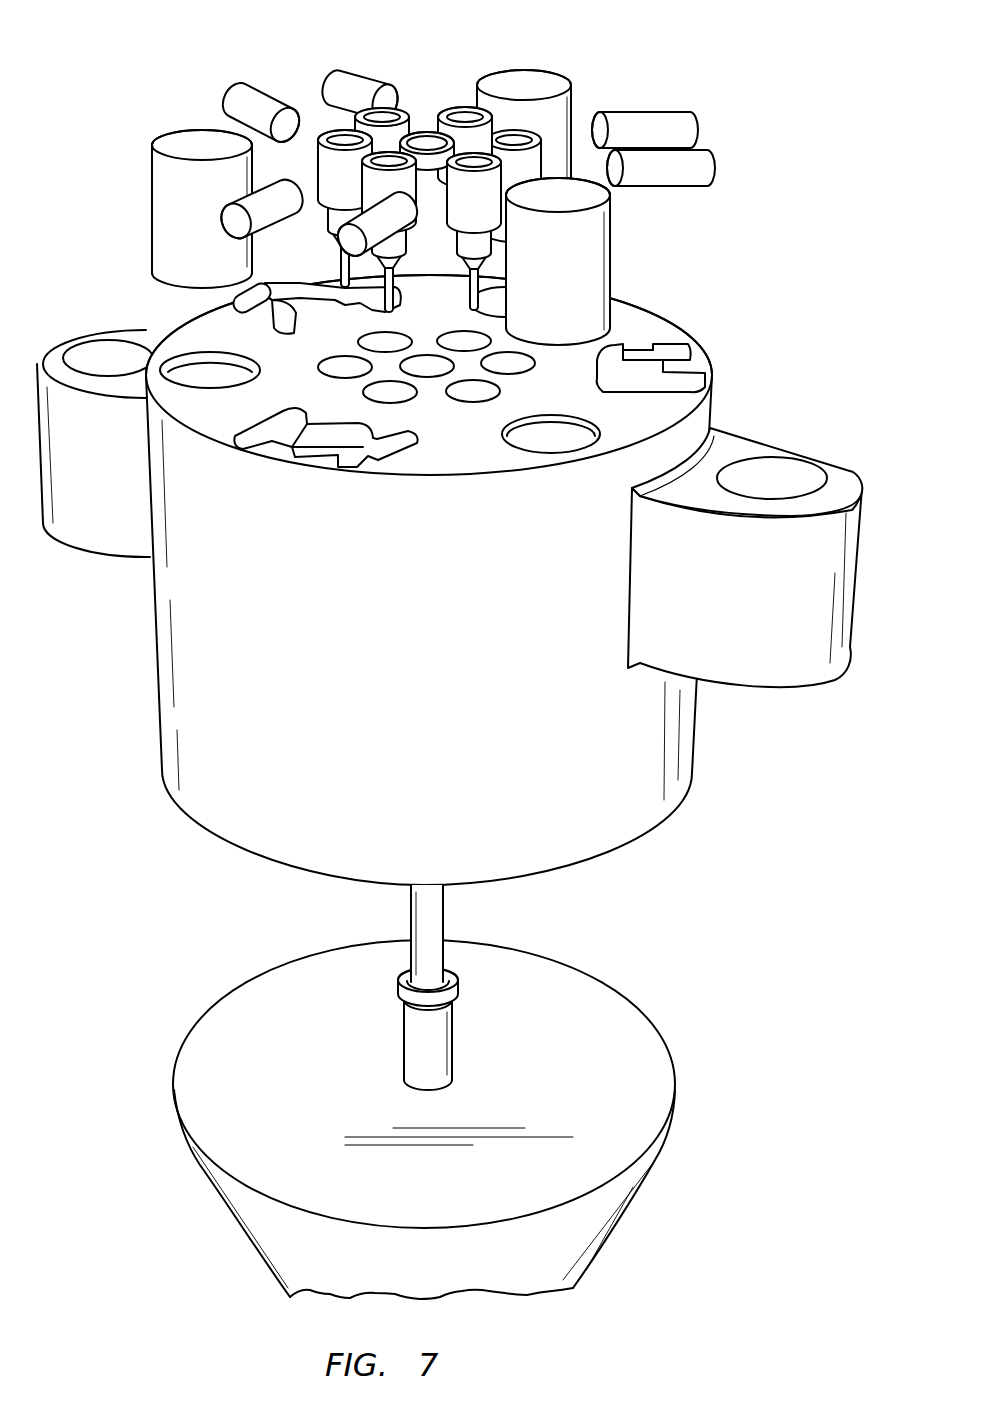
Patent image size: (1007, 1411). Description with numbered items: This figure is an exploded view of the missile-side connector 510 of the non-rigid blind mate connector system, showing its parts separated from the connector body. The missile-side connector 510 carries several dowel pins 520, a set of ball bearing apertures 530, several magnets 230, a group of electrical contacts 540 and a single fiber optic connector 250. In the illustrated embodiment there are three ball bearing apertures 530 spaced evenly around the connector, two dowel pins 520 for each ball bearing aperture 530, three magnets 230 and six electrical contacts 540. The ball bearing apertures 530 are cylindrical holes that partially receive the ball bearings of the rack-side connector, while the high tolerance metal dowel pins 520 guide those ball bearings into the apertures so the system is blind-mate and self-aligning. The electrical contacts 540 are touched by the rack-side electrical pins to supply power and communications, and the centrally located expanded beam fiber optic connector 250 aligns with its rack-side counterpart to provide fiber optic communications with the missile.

The magnet 230 is at (542, 82).
The fiber optic connector 250 is at (433, 908).
The missile-side connector 510 is at (178, 651).
The dowel pin 520 is at (235, 98).
The ball bearing aperture 530 is at (276, 287).
The electrical contact 540 is at (463, 115).